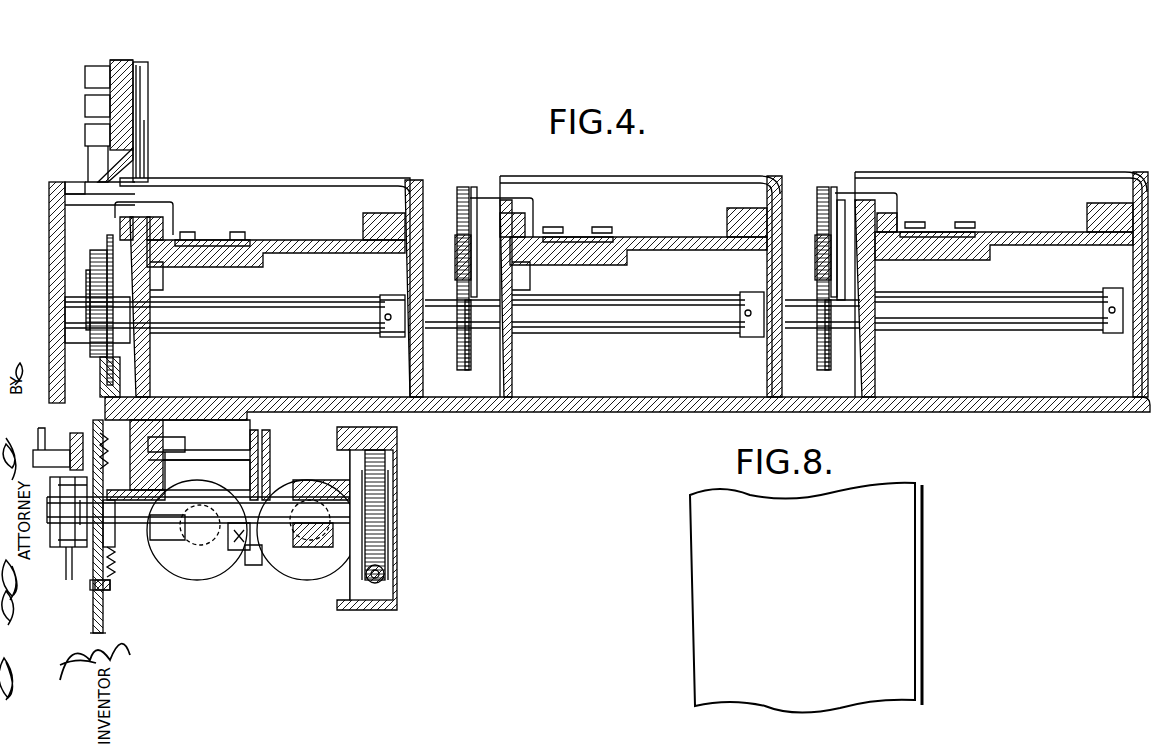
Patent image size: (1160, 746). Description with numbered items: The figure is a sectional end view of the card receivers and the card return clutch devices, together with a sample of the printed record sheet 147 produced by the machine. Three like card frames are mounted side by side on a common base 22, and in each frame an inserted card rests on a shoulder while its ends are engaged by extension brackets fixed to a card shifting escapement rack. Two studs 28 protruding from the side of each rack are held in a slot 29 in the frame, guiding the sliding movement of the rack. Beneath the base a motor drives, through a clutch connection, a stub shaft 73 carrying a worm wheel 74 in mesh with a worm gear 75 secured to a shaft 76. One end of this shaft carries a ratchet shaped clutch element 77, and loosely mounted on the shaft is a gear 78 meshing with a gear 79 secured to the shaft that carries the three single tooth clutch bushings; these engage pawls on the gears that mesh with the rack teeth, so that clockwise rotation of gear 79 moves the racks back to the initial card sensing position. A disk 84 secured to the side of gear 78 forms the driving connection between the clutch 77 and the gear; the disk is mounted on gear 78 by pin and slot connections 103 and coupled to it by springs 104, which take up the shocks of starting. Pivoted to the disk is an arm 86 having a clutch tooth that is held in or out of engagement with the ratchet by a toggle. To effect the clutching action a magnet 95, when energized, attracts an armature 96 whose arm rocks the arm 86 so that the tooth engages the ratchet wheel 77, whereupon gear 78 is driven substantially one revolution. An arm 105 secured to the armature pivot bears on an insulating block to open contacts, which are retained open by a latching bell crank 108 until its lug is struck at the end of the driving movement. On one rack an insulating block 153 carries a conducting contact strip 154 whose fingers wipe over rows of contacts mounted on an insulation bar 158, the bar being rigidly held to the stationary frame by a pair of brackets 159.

In FIG. 4, the base 22 is at (608, 408).
In FIG. 4, the stud 28 is at (165, 272).
In FIG. 4, the slot 29 is at (505, 280).
In FIG. 4, the stub shaft 73 is at (375, 585).
In FIG. 4, the worm wheel 74 is at (384, 574).
In FIG. 4, the worm gear 75 is at (386, 547).
In FIG. 4, the shaft 76 is at (350, 505).
In FIG. 4, the ratchet shaped clutch element 77 is at (78, 560).
In FIG. 4, the gear 78 is at (88, 625).
In FIG. 4, the gear 79 is at (95, 357).
In FIG. 4, the disk 84 is at (90, 598).
In FIG. 4, the arm 86 is at (82, 438).
In FIG. 4, the magnet 95 is at (212, 572).
In FIG. 4, the armature 96 is at (180, 565).
In FIG. 4, the pin and slot connection 103 is at (125, 592).
In FIG. 4, the spring 104 is at (123, 570).
In FIG. 4, the arm 105 is at (183, 438).
In FIG. 4, the latching bell crank 108 is at (180, 470).
In FIG. 8, the printed record sheet 147 is at (910, 638).
In FIG. 4, the insulating block 153 is at (122, 150).
In FIG. 4, the conducting contact strip 154 is at (85, 96).
In FIG. 4, the insulation bar 158 is at (128, 72).
In FIG. 4, the bracket 159 is at (148, 96).